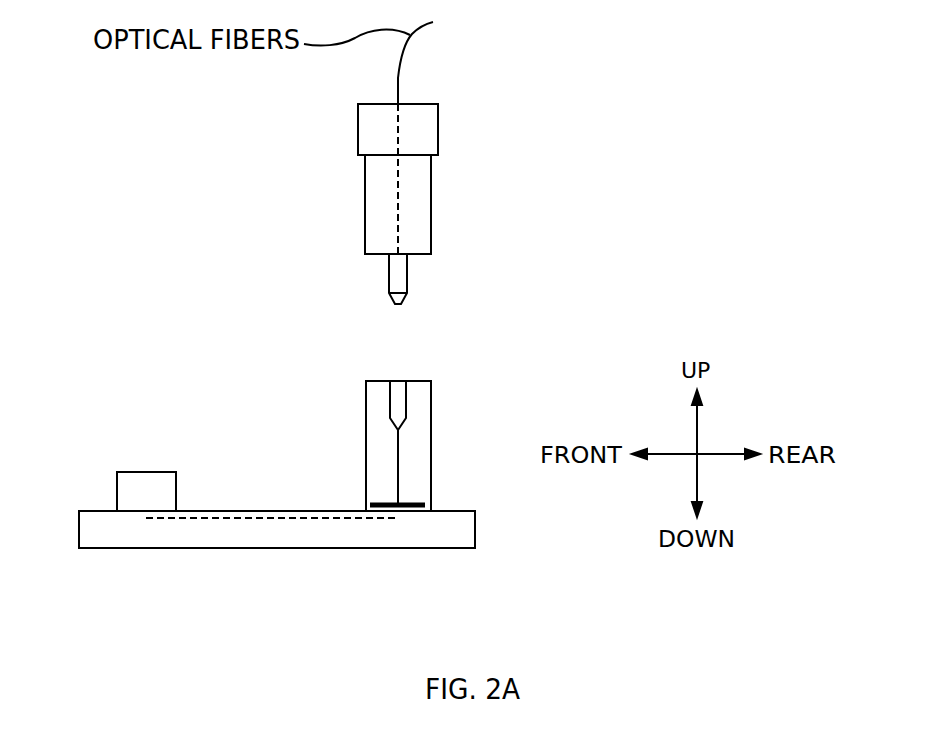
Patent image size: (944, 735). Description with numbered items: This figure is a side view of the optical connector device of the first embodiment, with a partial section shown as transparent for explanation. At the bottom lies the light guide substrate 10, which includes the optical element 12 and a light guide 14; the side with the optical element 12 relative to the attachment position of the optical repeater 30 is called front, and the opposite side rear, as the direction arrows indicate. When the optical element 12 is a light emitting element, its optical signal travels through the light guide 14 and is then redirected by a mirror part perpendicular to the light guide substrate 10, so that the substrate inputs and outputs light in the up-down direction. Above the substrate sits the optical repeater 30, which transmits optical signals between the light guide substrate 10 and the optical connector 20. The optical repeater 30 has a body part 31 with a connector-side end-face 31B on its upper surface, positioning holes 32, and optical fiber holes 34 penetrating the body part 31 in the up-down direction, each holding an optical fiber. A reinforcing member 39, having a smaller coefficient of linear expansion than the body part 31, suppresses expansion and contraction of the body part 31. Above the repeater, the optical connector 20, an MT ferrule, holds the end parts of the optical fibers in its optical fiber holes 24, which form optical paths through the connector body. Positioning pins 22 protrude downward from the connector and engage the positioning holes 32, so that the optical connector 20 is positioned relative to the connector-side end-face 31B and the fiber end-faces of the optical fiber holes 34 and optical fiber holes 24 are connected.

The light guide substrate 10 is at (214, 562).
The optical element 12 is at (117, 493).
The light guide 14 is at (300, 518).
The optical connector 20 is at (465, 201).
The positioning pin 22 is at (408, 273).
The optical fiber hole 24 is at (396, 205).
The optical repeater 30 is at (465, 412).
The body part 31 is at (366, 427).
The connector-side end-face 31B is at (413, 381).
The positioning hole 32 is at (393, 381).
The optical fiber hole 34 is at (399, 452).
The reinforcing member 39 is at (420, 503).